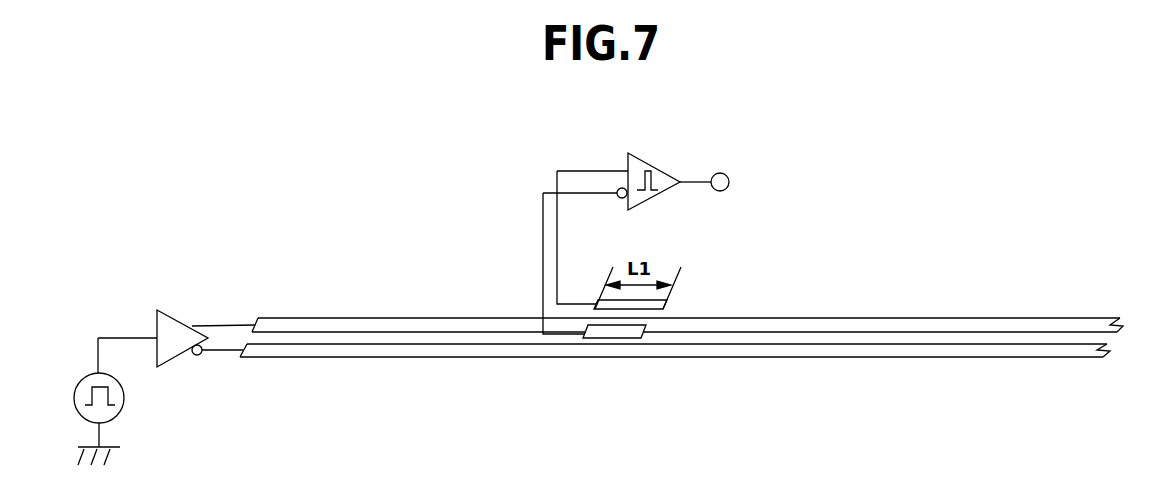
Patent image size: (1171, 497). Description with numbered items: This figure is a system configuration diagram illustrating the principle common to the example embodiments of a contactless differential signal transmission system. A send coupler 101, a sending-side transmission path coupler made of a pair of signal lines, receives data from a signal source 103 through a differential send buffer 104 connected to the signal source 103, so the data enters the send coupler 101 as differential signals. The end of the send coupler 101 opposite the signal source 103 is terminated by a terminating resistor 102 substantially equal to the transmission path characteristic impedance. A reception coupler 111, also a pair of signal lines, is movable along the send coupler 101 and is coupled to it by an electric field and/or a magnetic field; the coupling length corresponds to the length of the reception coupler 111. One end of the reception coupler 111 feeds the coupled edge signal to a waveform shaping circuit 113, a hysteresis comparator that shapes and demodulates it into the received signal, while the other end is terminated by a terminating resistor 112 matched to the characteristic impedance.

The send coupler 101 is at (948, 350).
The terminating resistor 102 is at (1105, 347).
The signal source 103 is at (125, 402).
The differential send buffer 104 is at (167, 312).
The reception coupler 111 is at (618, 310).
The terminating resistor 112 is at (655, 309).
The waveform shaping circuit 113 is at (666, 170).